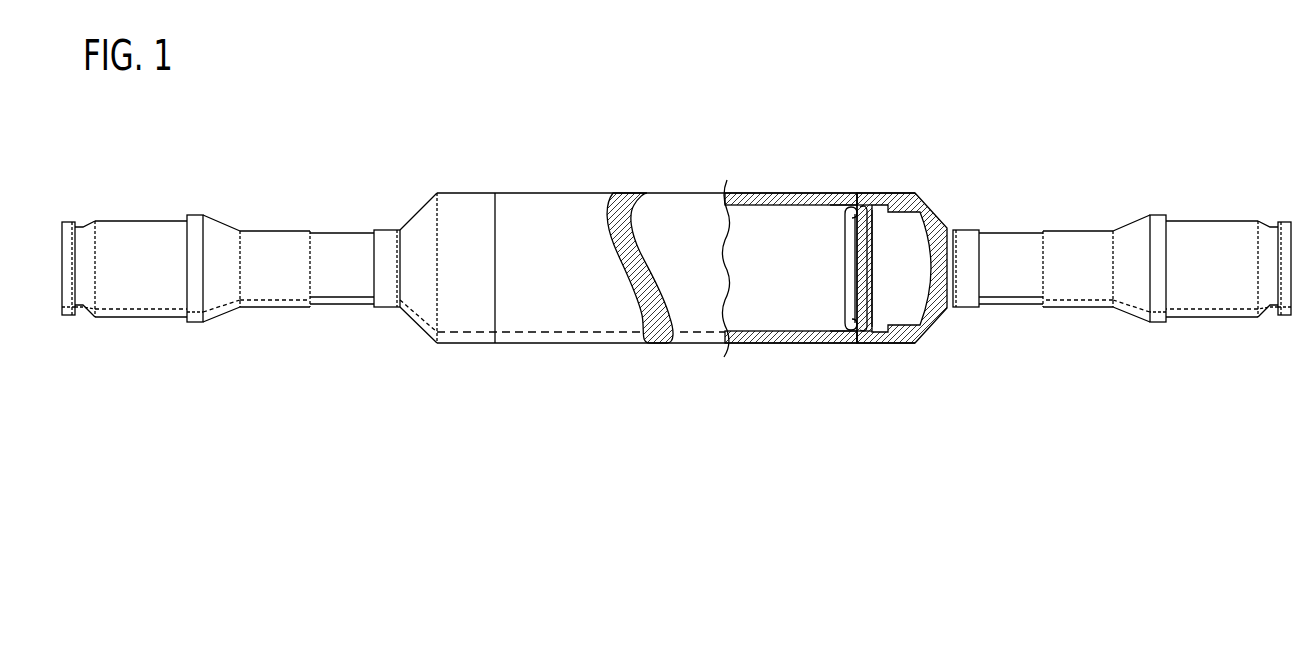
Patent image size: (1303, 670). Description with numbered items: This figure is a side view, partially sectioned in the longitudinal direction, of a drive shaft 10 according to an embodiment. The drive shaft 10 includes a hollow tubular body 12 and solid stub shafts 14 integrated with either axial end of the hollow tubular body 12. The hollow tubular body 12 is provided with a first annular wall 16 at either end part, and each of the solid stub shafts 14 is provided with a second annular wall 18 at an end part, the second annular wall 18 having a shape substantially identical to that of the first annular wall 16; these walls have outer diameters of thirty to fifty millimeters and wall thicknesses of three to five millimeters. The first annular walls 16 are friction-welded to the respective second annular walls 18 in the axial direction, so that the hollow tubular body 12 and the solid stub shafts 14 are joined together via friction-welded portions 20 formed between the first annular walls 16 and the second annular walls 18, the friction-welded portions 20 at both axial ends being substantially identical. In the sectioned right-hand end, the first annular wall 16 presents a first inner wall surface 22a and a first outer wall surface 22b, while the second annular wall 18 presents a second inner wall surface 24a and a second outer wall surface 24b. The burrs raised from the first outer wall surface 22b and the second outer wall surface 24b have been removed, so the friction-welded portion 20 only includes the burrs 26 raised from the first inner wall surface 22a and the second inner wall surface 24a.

The drive shaft 10 is at (348, 100).
The hollow tubular body 12 is at (591, 334).
The solid stub shaft 14 is at (123, 220).
The first annular wall 16 is at (527, 344).
The second annular wall 18 is at (466, 344).
The friction-welded portion 20 is at (494, 186).
The first inner wall surface 22a is at (809, 331).
The first outer wall surface 22b is at (782, 344).
The second inner wall surface 24a is at (885, 331).
The second outer wall surface 24b is at (885, 344).
The burr 26 is at (838, 221).